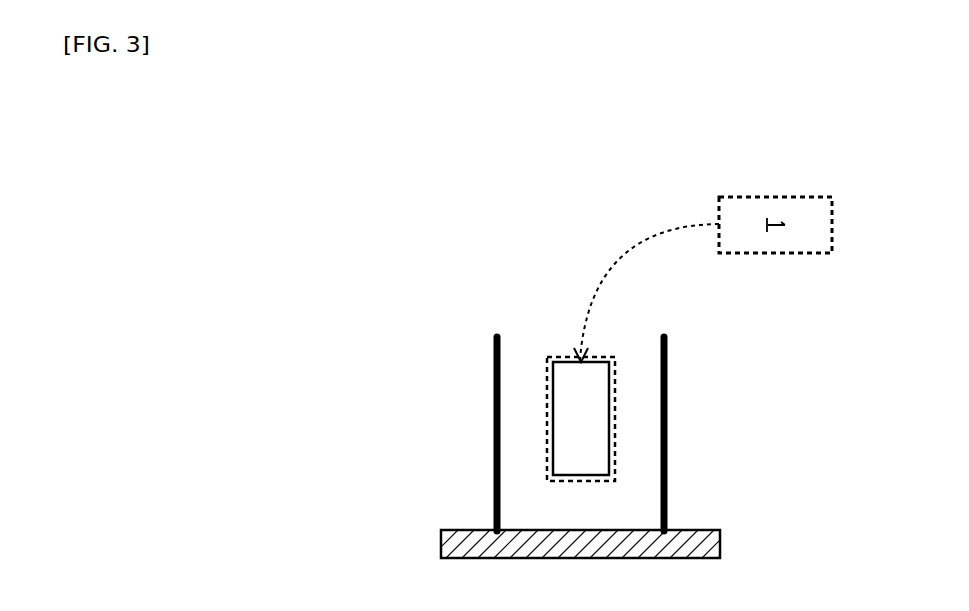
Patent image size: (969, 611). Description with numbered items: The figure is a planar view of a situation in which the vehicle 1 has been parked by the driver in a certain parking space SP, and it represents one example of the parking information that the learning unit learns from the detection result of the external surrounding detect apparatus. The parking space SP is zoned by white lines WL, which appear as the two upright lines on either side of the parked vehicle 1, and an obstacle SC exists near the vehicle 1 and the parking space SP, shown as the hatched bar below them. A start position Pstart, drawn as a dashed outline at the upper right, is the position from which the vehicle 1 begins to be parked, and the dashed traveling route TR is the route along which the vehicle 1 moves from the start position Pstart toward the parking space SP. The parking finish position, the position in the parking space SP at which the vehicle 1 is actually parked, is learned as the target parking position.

The vehicle 1 is at (588, 428).
The traveling route TR is at (617, 263).
The start position Pstart is at (740, 197).
The parking space SP is at (510, 406).
The white line WL is at (495, 477).
The obstacle SC is at (440, 552).